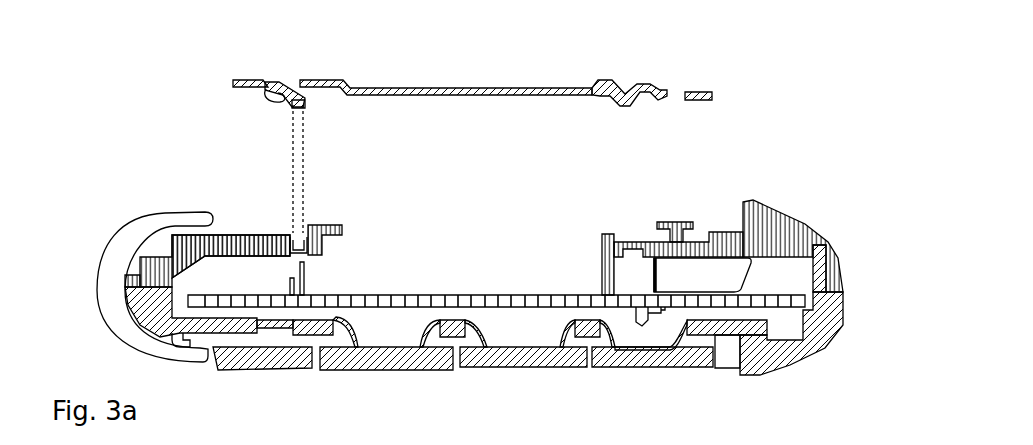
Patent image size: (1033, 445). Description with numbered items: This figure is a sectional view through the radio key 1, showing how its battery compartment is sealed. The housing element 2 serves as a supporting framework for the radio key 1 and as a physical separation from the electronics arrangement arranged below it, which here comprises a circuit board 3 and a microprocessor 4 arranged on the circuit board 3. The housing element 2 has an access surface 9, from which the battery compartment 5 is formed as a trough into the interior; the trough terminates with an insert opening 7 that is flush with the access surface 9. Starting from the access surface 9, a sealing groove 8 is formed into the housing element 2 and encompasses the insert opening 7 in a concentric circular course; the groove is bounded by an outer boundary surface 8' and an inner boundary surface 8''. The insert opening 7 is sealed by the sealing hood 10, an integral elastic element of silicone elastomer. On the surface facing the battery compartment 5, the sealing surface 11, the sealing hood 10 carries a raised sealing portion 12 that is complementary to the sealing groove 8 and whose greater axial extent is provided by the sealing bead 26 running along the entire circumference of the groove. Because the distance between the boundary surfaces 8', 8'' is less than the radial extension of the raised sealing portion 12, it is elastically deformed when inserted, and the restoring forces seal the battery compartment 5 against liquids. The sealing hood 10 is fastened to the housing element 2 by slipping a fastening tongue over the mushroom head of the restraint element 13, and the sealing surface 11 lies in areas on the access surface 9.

The radio key 1 is at (117, 193).
The housing element 2 is at (193, 234).
The circuit board 3 is at (362, 293).
The microprocessor 4 is at (673, 268).
The battery compartment 5 is at (371, 260).
The insert opening 7 is at (601, 232).
The sealing groove 8 is at (672, 215).
The outer boundary surface 8' is at (275, 179).
The inner boundary surface 8'' is at (328, 169).
The access surface 9 is at (225, 232).
The sealing hood 10 is at (657, 92).
The sealing surface 11 is at (450, 96).
The raised sealing portion 12 is at (273, 86).
The restraint element 13 is at (676, 226).
The sealing bead 26 is at (303, 103).